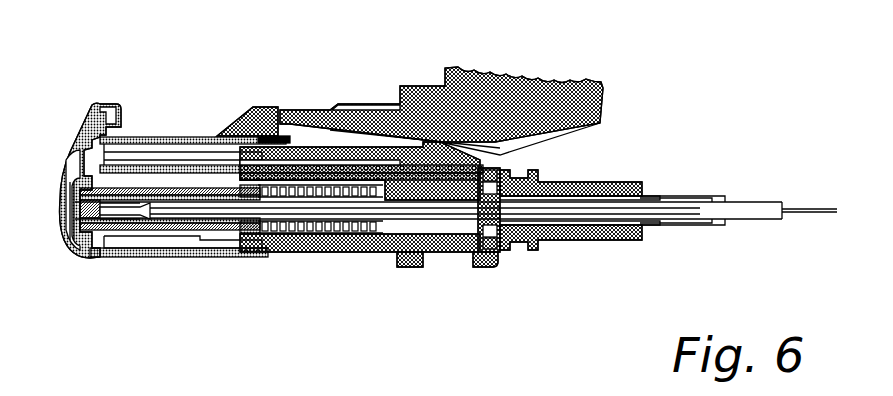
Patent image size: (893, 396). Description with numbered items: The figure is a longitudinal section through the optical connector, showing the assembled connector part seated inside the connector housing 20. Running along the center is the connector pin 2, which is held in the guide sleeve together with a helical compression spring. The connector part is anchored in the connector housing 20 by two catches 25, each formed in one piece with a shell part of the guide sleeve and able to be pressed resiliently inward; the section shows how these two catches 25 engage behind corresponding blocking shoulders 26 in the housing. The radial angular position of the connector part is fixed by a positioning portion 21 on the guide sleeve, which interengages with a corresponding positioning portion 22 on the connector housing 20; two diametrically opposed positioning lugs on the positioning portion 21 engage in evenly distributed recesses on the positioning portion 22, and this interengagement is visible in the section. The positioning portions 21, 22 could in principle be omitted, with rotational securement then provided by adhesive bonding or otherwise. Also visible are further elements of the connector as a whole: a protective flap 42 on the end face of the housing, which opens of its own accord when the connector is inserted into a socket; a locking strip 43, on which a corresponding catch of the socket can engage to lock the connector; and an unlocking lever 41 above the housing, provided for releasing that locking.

The connector pin 2 is at (157, 264).
The connector housing 20 is at (351, 262).
The positioning portion 21 is at (502, 252).
The positioning portion 22 is at (490, 252).
The catch 25 is at (250, 262).
The blocking shoulder 26 is at (322, 262).
The unlocking lever 41 is at (558, 86).
The protective flap 42 is at (78, 256).
The locking strip 43 is at (263, 104).